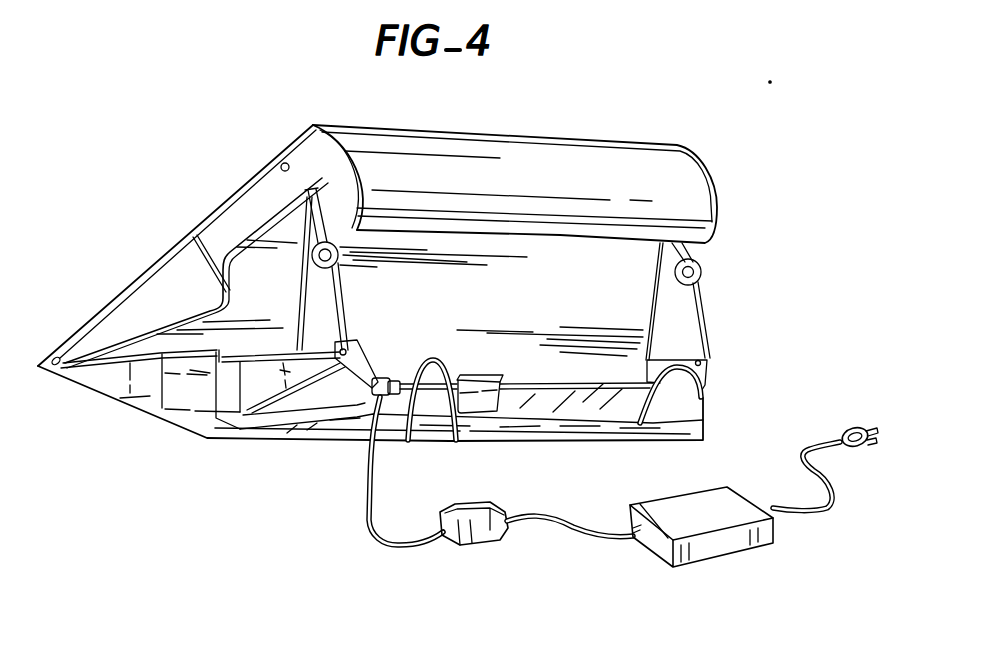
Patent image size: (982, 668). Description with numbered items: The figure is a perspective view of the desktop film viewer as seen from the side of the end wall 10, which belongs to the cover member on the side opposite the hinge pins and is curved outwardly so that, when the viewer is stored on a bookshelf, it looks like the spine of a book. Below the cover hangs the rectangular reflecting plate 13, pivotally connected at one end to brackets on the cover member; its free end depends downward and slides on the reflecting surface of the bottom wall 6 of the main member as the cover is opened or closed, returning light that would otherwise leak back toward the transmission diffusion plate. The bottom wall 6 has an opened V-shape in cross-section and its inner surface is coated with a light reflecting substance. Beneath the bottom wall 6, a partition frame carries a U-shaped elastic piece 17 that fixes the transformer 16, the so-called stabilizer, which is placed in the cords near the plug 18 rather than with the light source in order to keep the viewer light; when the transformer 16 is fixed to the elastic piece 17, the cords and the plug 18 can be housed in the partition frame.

The end wall 10 is at (627, 167).
The reflecting plate 13 is at (633, 306).
The bottom wall 6 is at (622, 400).
The U-shaped elastic piece 17 is at (486, 400).
The transformer 16 is at (727, 518).
The plug 18 is at (851, 428).